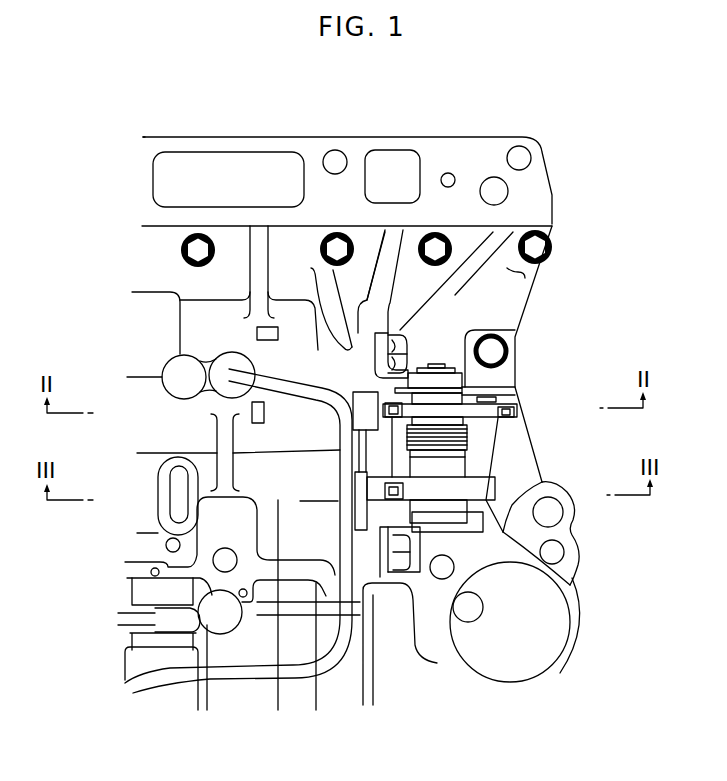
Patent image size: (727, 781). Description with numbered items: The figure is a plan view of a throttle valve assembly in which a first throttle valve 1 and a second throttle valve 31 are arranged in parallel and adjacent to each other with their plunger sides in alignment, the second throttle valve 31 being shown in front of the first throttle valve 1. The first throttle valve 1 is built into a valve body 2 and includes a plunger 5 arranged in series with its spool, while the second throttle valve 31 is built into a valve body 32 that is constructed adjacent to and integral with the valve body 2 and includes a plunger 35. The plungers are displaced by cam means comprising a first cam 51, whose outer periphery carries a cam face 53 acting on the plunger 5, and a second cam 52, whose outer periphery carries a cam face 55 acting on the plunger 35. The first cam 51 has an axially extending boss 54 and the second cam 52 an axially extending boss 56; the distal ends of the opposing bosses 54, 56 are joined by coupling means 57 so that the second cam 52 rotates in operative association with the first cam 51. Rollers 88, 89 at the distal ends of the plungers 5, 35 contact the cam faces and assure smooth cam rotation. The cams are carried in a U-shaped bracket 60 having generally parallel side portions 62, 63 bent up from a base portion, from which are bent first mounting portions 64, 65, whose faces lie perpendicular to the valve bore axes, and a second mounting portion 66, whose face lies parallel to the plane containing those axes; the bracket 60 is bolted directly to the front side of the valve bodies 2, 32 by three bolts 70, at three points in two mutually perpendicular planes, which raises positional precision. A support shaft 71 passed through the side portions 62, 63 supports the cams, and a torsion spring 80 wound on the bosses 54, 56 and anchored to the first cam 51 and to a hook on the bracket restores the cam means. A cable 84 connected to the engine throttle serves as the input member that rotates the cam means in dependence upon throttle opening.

The first throttle valve 1 is at (112, 372).
The valve body 2 is at (273, 433).
The valve body 32 is at (238, 531).
The plunger 5 is at (345, 420).
The second throttle valve 31 is at (123, 515).
The plunger 35 is at (360, 495).
The first cam 51 is at (493, 403).
The second cam 52 is at (490, 488).
The cam face 53 is at (375, 357).
The boss 54 is at (508, 375).
The cam face 55 is at (430, 500).
The boss 56 is at (487, 500).
The coupling means 57 is at (440, 456).
The bracket 60 is at (487, 462).
The side portion 62 is at (487, 327).
The side portion 63 is at (570, 583).
The first mounting portion 64 is at (380, 333).
The first mounting portion 65 is at (383, 575).
The second mounting portion 66 is at (515, 380).
The bolt 70 is at (407, 350).
The support shaft 71 is at (434, 367).
The torsion spring 80 is at (470, 445).
The cable 84 is at (520, 410).
The roller 88 is at (393, 417).
The roller 89 is at (400, 500).